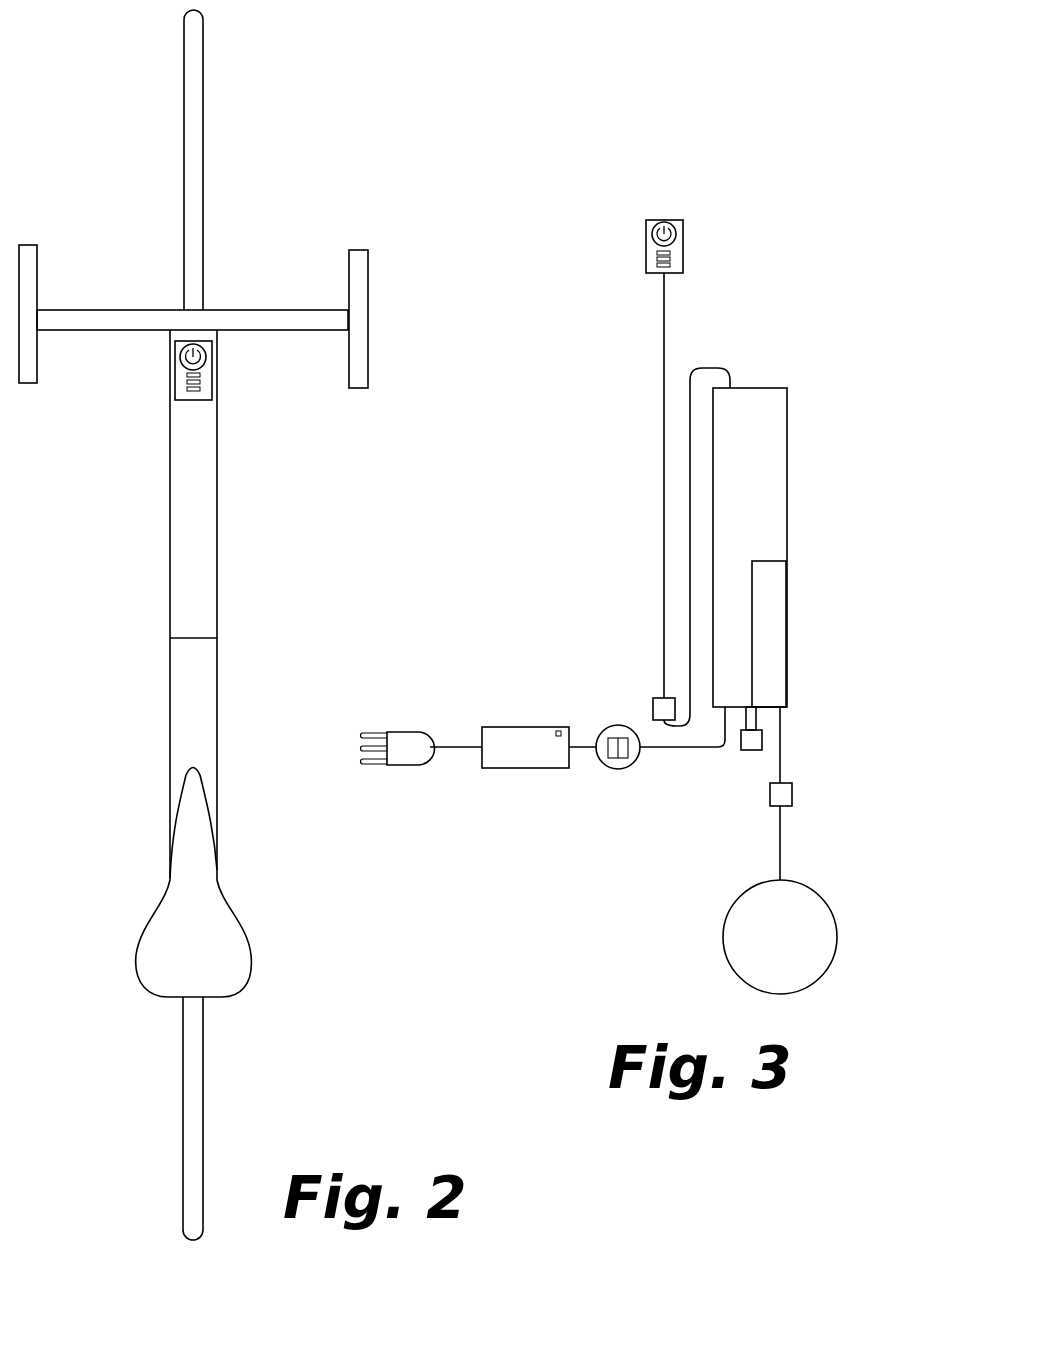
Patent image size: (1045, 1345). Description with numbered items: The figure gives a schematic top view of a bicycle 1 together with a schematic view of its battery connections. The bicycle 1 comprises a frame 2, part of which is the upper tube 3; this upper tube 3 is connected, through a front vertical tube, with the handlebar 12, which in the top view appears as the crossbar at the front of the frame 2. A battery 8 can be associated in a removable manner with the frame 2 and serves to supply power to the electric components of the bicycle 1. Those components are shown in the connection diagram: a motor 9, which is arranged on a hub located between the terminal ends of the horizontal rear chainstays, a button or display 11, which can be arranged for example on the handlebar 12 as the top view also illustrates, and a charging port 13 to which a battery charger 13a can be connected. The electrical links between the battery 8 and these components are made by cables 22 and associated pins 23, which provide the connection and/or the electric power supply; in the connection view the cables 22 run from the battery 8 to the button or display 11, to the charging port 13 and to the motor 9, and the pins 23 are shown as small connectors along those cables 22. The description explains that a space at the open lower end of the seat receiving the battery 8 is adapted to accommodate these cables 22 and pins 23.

In FIG. 2, the bicycle 1 is at (354, 118).
In FIG. 2, the frame 2 is at (247, 589).
In FIG. 2, the upper tube 3 is at (178, 580).
In FIG. 3, the battery 8 is at (761, 390).
In FIG. 3, the motor 9 is at (721, 950).
In FIG. 2, the button or display 11 is at (181, 338).
In FIG. 3, the button or display 11 is at (647, 211).
In FIG. 2, the handlebar 12 is at (260, 287).
In FIG. 3, the charging port 13 is at (604, 728).
In FIG. 3, the battery charger 13a is at (511, 775).
In FIG. 3, the cables 22 is at (710, 368).
In FIG. 3, the pins 23 is at (743, 750).